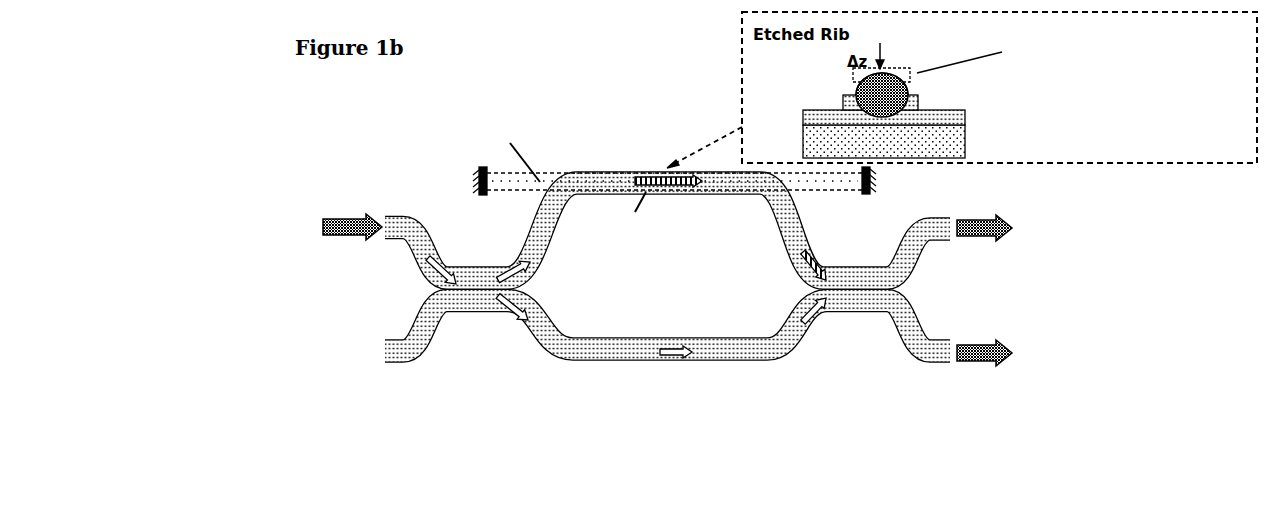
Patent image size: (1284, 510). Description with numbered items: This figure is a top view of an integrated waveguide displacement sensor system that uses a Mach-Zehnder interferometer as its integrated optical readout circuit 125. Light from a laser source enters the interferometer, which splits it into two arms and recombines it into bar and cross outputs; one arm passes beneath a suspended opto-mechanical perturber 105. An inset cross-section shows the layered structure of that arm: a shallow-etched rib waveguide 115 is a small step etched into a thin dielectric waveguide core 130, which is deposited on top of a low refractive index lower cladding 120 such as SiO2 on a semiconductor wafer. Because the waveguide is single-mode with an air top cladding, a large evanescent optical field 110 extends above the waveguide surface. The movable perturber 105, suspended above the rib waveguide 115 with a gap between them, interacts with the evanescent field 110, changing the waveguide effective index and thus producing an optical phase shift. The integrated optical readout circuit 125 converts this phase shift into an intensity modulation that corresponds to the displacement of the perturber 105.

The movable optical perturber 105 is at (795, 119).
The evanescent optical field 110 is at (917, 88).
The shallow-etched rib waveguide 115 is at (842, 102).
The lower cladding 120 is at (970, 142).
The integrated optical readout circuit 125 is at (787, 357).
The waveguide core 130 is at (965, 93).